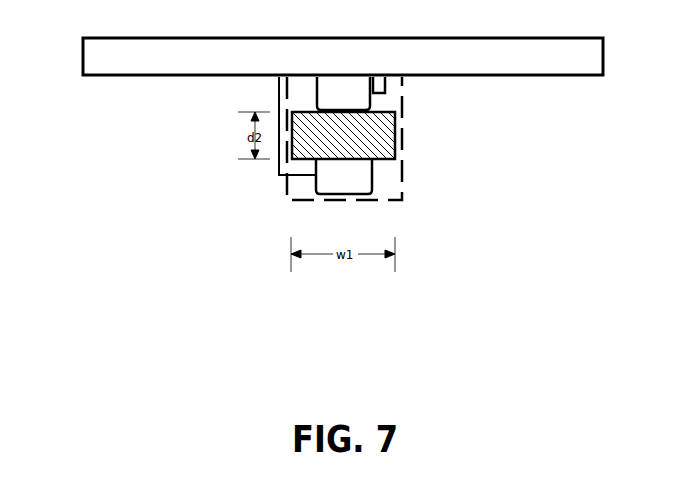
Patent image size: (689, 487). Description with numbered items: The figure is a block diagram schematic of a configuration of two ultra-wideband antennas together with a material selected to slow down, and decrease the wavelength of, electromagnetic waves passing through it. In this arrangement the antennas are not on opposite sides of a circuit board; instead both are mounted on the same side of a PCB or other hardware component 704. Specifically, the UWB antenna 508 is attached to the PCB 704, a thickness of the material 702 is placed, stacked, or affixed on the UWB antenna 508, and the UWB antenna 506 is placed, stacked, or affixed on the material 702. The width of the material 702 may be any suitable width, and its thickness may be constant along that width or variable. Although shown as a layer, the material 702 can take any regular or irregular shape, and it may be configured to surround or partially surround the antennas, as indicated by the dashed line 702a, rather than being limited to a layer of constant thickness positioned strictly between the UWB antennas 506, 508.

The PCB 704 is at (97, 76).
The UWB antenna 508 is at (328, 75).
The dashed line 702a is at (404, 90).
The material 702 is at (398, 142).
The UWB antenna 506 is at (373, 184).